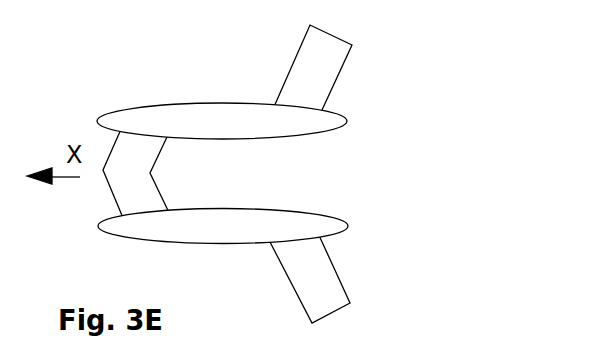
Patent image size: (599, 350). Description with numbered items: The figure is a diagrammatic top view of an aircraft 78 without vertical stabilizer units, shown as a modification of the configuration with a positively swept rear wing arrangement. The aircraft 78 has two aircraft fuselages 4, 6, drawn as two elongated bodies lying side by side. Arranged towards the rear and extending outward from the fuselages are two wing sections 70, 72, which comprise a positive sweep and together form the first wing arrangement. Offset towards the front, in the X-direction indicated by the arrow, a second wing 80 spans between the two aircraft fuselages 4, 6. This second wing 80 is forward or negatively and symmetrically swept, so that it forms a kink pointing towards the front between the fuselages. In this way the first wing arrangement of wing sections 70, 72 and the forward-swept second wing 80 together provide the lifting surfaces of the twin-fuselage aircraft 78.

The aircraft fuselage 4 is at (245, 235).
The aircraft fuselage 6 is at (207, 115).
The wing section 70 is at (325, 281).
The wing section 72 is at (320, 48).
The aircraft 78 is at (366, 92).
The second wing 80 is at (143, 166).